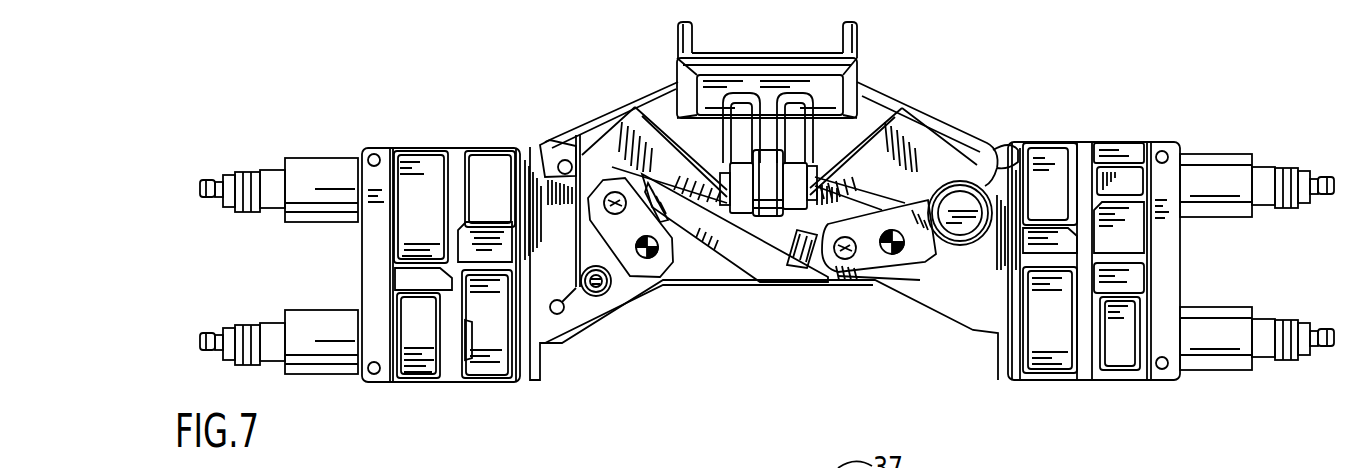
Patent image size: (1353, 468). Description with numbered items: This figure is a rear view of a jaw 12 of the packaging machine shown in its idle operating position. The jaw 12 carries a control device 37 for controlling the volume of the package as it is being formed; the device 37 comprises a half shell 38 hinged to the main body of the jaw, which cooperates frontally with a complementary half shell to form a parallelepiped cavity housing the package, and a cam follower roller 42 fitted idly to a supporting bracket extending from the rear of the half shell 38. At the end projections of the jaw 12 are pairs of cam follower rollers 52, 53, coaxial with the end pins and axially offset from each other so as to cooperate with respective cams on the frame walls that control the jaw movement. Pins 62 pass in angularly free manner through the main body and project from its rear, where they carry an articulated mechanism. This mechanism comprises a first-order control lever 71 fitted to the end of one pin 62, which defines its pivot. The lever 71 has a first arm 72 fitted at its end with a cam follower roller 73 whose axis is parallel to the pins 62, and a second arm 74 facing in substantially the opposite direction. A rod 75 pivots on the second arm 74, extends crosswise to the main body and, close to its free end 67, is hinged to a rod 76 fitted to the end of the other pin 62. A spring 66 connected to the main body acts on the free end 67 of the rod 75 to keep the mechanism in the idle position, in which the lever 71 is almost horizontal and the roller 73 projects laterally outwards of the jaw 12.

The jaw 12 is at (977, 106).
The control device 37 is at (803, 54).
The half shell 38 is at (717, 86).
The cam follower roller 42 is at (770, 218).
The cam follower roller 52 is at (473, 165).
The cam follower roller 53 is at (417, 363).
The pin 62 is at (665, 257).
The spring 66 is at (577, 313).
The free end of rod 67 is at (545, 160).
The first-order control lever 71 is at (902, 267).
The first arm 72 is at (907, 216).
The cam follower roller 73 is at (1028, 142).
The second arm 74 is at (870, 248).
The rod 75 is at (741, 237).
The rod 76 is at (622, 252).